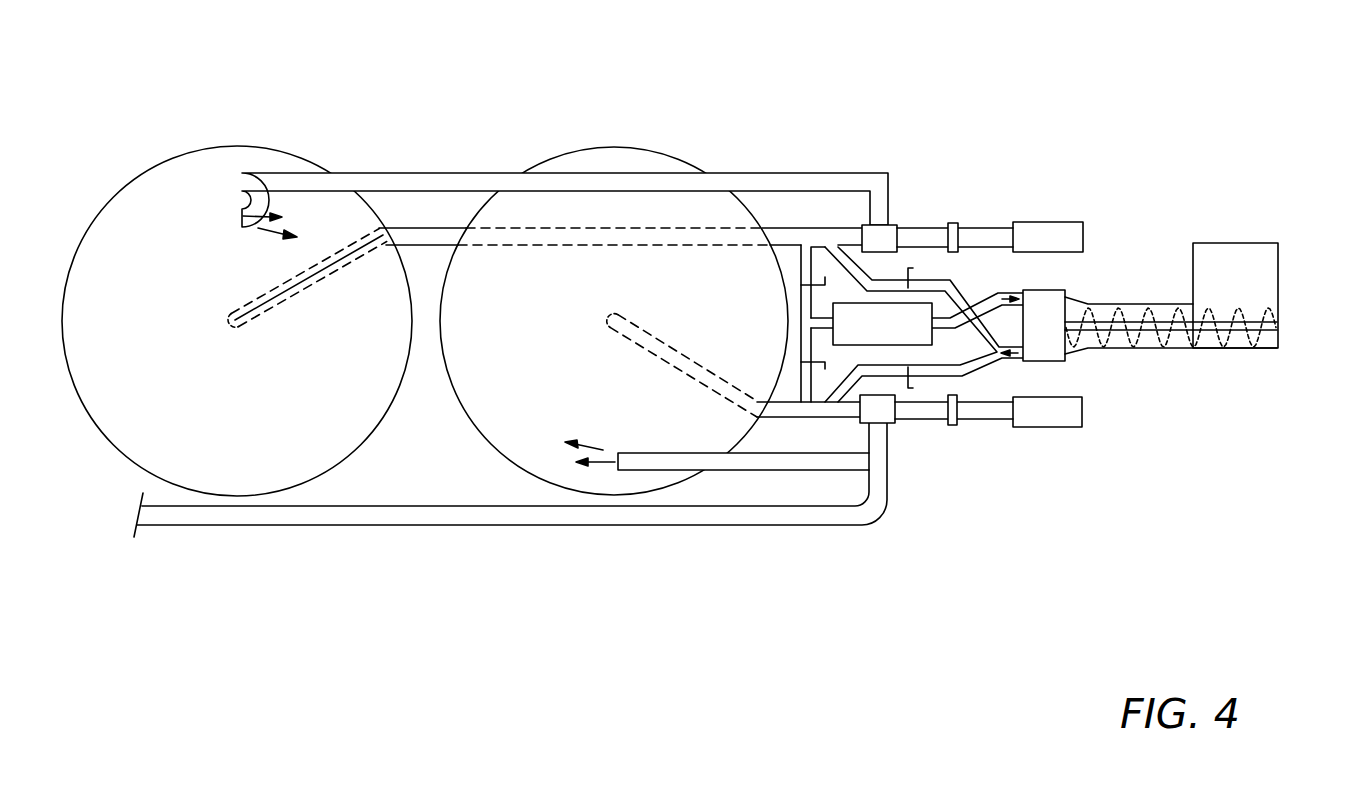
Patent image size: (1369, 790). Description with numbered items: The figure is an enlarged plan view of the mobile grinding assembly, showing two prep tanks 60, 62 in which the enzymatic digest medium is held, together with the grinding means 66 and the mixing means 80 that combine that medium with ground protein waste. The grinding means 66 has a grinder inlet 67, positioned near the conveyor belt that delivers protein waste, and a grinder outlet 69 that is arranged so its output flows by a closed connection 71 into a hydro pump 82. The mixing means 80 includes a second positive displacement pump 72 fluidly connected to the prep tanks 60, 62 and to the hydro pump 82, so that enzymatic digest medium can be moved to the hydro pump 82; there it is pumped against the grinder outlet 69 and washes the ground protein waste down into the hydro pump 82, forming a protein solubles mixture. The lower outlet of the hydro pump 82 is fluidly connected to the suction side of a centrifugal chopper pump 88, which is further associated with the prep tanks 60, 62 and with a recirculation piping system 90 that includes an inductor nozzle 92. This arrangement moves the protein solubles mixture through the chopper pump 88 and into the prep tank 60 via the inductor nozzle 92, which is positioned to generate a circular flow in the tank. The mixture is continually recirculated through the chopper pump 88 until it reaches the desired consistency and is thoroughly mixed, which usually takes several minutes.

The mixing means 80 is at (688, 72).
The prep tank 60 is at (292, 486).
The prep tank 62 is at (537, 476).
The inductor nozzle 92 is at (255, 172).
The recirculation piping system 90 is at (420, 228).
The second positive displacement pump 72 is at (869, 232).
The centrifugal chopper pump 88 is at (1028, 222).
The hydro pump 82 is at (882, 303).
The closed connection 71 is at (1067, 292).
The grinder outlet 69 is at (1065, 327).
The grinder inlet 67 is at (1305, 327).
The grinding means 66 is at (1242, 196).